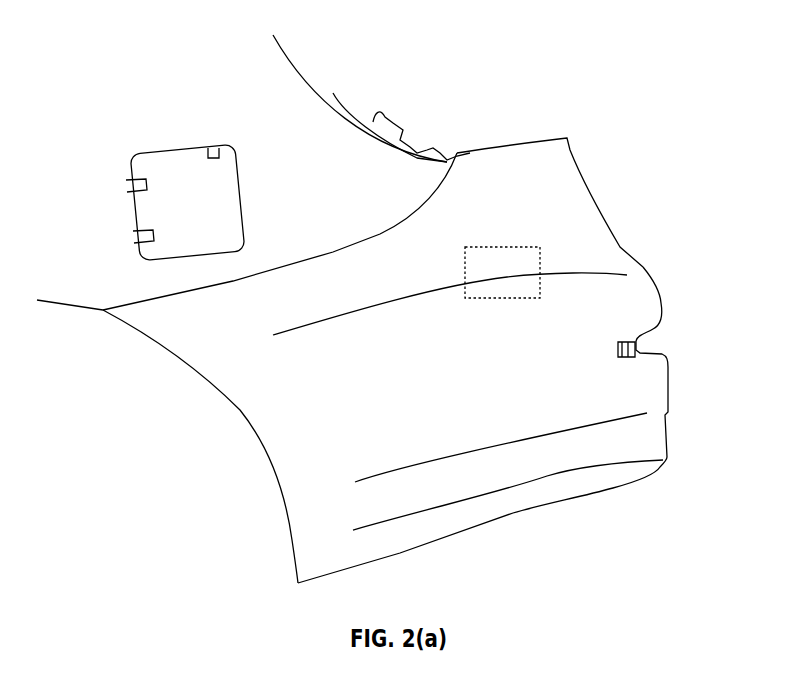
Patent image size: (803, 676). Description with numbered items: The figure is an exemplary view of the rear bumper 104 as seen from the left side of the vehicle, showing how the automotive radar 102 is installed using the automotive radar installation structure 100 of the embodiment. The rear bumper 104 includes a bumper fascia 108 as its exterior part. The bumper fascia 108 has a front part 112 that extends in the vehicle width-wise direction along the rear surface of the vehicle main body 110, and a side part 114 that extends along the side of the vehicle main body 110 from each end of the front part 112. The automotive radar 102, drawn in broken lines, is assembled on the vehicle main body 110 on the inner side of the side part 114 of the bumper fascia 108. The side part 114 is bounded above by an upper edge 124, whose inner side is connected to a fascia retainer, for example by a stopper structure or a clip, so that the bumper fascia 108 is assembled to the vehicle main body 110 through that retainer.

The automotive radar installation structure 100 is at (490, 246).
The automotive radar 102 is at (510, 244).
The rear bumper 104 is at (560, 134).
The bumper fascia 108 is at (643, 264).
The vehicle main body 110 is at (297, 157).
The front part 112 is at (660, 297).
The side part 114 is at (507, 417).
The upper edge 124 is at (348, 240).